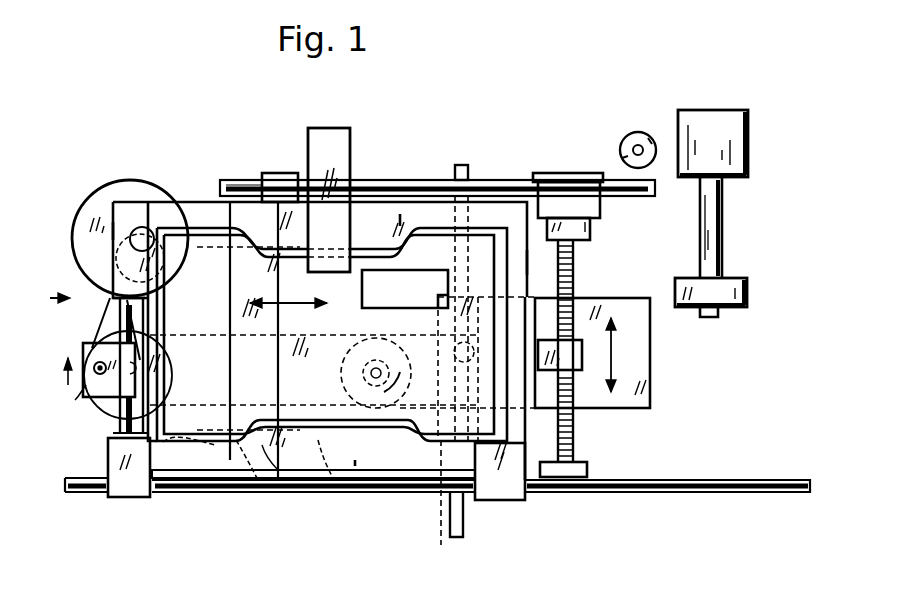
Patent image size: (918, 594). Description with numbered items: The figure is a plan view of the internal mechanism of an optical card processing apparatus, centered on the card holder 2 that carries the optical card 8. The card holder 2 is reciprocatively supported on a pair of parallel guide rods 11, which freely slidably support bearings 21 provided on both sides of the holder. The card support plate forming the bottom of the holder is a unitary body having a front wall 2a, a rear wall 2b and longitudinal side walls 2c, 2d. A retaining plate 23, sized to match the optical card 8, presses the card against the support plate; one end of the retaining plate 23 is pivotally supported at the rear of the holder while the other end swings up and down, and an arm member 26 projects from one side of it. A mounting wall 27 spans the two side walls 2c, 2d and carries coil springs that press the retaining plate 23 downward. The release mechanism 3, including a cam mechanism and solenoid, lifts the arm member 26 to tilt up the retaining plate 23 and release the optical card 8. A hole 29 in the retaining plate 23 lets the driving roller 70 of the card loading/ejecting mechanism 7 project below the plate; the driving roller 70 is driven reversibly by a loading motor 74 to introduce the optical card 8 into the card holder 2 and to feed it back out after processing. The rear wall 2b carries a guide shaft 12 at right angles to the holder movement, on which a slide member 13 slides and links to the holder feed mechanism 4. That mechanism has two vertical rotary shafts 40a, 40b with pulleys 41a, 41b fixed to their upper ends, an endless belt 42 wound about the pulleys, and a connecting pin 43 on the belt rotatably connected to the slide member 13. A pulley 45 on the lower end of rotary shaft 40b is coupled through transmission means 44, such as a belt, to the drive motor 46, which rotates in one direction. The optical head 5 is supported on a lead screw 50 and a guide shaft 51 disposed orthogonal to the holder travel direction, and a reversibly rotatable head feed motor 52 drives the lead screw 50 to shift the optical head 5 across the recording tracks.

The card holder 2 is at (200, 210).
The front wall 2a is at (519, 263).
The rear wall 2b is at (113, 222).
The longitudinal side wall 2c is at (402, 212).
The longitudinal side wall 2d is at (358, 462).
The release mechanism 3 is at (634, 133).
The holder feed mechanism 4 is at (50, 297).
The optical head 5 is at (652, 362).
The card loading/ejecting mechanism 7 is at (745, 186).
The optical card 8 is at (256, 482).
The guide rods 11 is at (366, 184).
The guide shaft 12 is at (112, 412).
The slide member 13 is at (117, 433).
The bearings 21 is at (282, 180).
The retaining plate 23 is at (478, 243).
The arm member 26 is at (332, 127).
The mounting wall 27 is at (282, 470).
The hole 29 is at (398, 268).
The vertical rotary shaft 40a is at (360, 368).
The vertical rotary shaft 40b is at (180, 455).
The pulley 41a is at (445, 508).
The pulley 41b is at (132, 437).
The endless belt 42 is at (333, 480).
The connecting pin 43 is at (88, 352).
The transmission means 44 is at (100, 300).
The pulley 45 is at (100, 400).
The drive motor 46 is at (136, 179).
The lead screw 50 is at (575, 432).
The guide shaft 51 is at (463, 518).
The head feed motor 52 is at (566, 172).
The driving roller 70 is at (748, 283).
The loading motor 74 is at (717, 109).